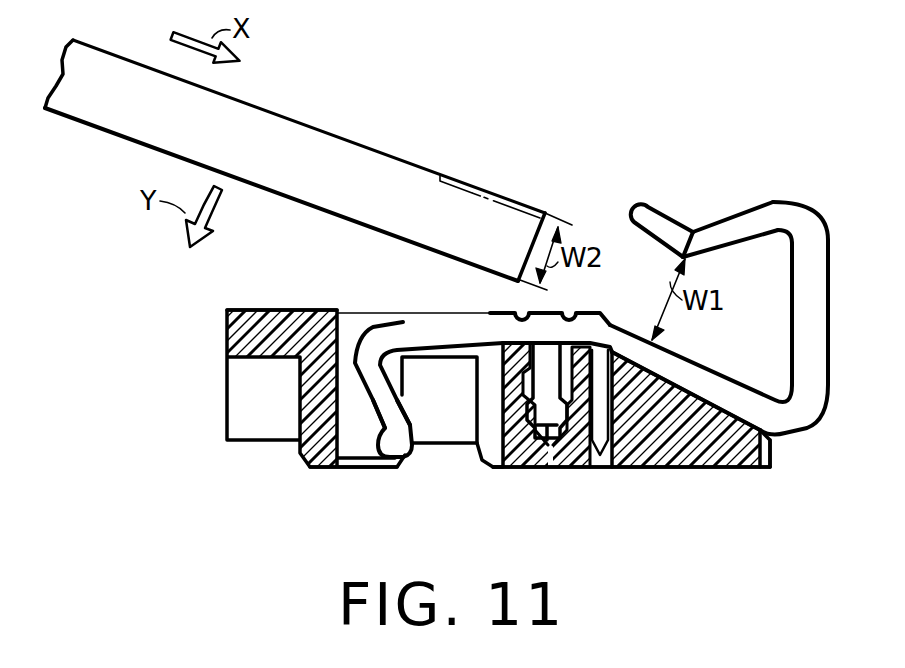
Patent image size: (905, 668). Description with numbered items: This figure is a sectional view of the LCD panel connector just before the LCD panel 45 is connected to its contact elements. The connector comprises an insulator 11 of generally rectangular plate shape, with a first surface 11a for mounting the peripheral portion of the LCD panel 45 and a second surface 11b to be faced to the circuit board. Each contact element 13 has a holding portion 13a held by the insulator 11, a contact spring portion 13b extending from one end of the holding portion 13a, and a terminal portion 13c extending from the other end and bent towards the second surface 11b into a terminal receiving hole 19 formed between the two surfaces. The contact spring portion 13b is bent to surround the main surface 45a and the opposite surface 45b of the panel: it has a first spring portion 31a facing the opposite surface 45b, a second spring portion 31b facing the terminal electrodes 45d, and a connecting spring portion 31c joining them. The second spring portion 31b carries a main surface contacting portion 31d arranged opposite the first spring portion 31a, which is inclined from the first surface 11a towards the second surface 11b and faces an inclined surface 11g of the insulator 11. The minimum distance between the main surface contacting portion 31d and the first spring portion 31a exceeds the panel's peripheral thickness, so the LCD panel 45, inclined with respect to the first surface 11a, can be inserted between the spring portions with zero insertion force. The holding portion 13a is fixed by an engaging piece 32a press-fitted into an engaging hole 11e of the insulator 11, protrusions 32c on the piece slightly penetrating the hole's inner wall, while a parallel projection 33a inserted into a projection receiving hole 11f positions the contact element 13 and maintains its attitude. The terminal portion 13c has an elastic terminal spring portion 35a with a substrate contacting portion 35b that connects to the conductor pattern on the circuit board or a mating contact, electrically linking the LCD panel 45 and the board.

The insulator 11 is at (227, 336).
The first surface 11a is at (270, 308).
The second surface 11b is at (718, 470).
The engaging hole 11e is at (510, 463).
The projection receiving hole 11f is at (600, 458).
The inclined surface 11g is at (786, 434).
The contact element 13 is at (595, 343).
The holding portion 13a is at (556, 312).
The contact spring portion 13b is at (830, 345).
The terminal portion 13c is at (383, 332).
The terminal receiving hole 19 is at (442, 443).
The first spring portion 31a is at (703, 370).
The second spring portion 31b is at (745, 226).
The connecting spring portion 31c is at (820, 272).
The main surface contacting portion 31d is at (695, 232).
The engaging piece 32a is at (543, 443).
The protrusion 32c is at (622, 320).
The projection 33a is at (630, 425).
The elastic terminal spring portion 35a is at (387, 412).
The substrate contacting portion 35b is at (418, 452).
The LCD panel 45 is at (307, 160).
The main surface 45a is at (304, 124).
The opposite surface 45b is at (340, 218).
The terminal electrode 45d is at (512, 200).